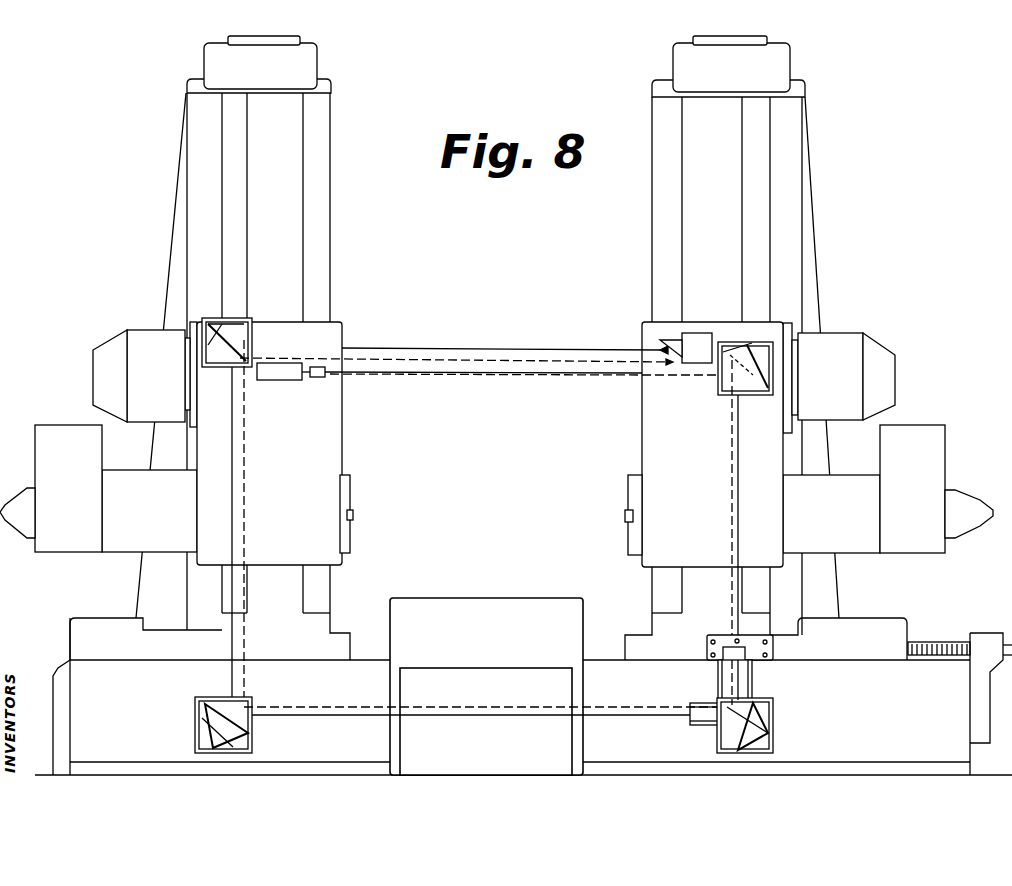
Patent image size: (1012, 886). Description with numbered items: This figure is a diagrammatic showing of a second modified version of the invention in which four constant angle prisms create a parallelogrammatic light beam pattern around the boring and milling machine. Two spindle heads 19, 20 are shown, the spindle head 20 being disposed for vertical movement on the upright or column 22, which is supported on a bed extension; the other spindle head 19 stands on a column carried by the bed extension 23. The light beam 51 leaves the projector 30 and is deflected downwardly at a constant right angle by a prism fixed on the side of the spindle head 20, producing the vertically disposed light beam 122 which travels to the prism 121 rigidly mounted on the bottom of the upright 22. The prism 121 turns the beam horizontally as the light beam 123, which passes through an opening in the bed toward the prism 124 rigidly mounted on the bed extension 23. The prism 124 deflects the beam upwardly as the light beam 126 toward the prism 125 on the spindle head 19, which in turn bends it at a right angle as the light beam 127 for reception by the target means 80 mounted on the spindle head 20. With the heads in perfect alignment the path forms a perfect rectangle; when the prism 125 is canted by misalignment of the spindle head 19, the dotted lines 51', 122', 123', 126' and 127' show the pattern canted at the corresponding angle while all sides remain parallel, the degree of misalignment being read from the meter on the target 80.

The spindle head 19 is at (328, 446).
The spindle head 20 is at (650, 450).
The column 22 is at (787, 188).
The bed extension 23 is at (320, 768).
The projector 30 is at (291, 384).
The light beam 51 is at (681, 396).
The dotted line light beam 51' is at (483, 399).
The target means 80 is at (701, 330).
The prism 121 is at (753, 732).
The vertically disposed light beam 122 is at (747, 521).
The dotted line light beam 122' is at (695, 532).
The light beam 123 is at (471, 737).
The dotted line light beam 123' is at (480, 691).
The prism 124 is at (210, 730).
The prism 125 is at (240, 333).
The light beam 126 is at (192, 532).
The dotted line light beam 126' is at (272, 522).
The light beam 127 is at (505, 330).
The dotted line light beam 127' is at (456, 340).